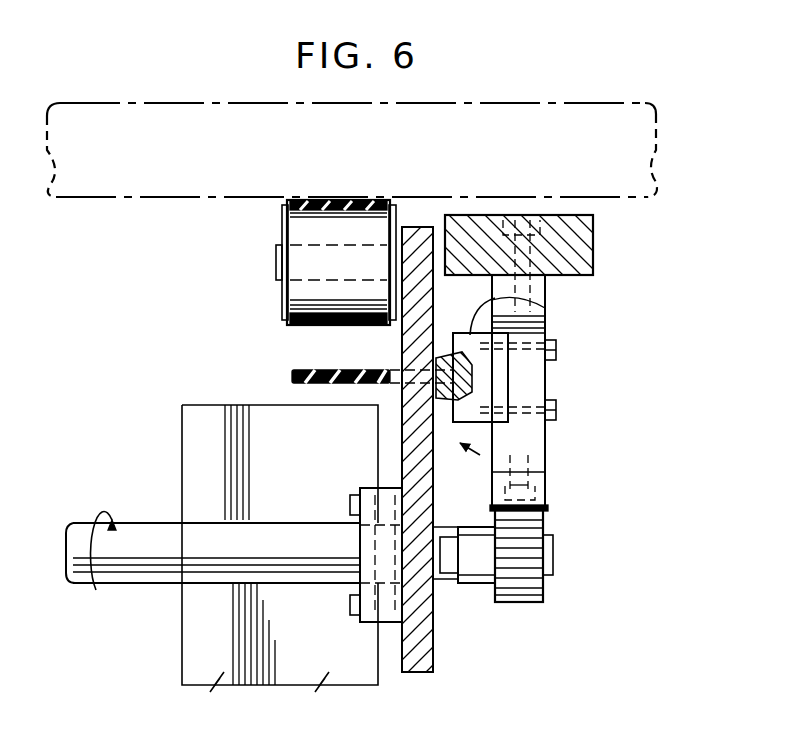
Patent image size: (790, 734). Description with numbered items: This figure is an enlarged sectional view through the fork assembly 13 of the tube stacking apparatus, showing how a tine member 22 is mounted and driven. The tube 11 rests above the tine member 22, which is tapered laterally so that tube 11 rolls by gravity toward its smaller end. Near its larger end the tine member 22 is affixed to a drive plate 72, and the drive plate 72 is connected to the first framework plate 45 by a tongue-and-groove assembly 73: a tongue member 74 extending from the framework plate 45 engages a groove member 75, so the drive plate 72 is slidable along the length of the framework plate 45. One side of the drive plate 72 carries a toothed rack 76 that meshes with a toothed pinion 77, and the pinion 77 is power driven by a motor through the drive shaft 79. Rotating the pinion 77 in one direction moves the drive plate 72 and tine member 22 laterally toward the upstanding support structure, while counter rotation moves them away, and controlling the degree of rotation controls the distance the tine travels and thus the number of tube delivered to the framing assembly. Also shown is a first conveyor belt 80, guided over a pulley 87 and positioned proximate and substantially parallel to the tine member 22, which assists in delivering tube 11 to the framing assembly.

The tube 11 is at (605, 173).
The fork assembly 13 is at (584, 393).
The tine member 22 is at (580, 262).
The first framework plate 45 is at (412, 338).
The drive plate 72 is at (550, 438).
The tongue-and-groove assembly 73 is at (552, 450).
The tongue member 74 is at (548, 308).
The groove member 75 is at (556, 372).
The toothed rack 76 is at (548, 488).
The toothed pinion 77 is at (520, 592).
The drive shaft 79 is at (165, 560).
The first conveyor belt 80 is at (332, 207).
The pulley 87 is at (328, 322).